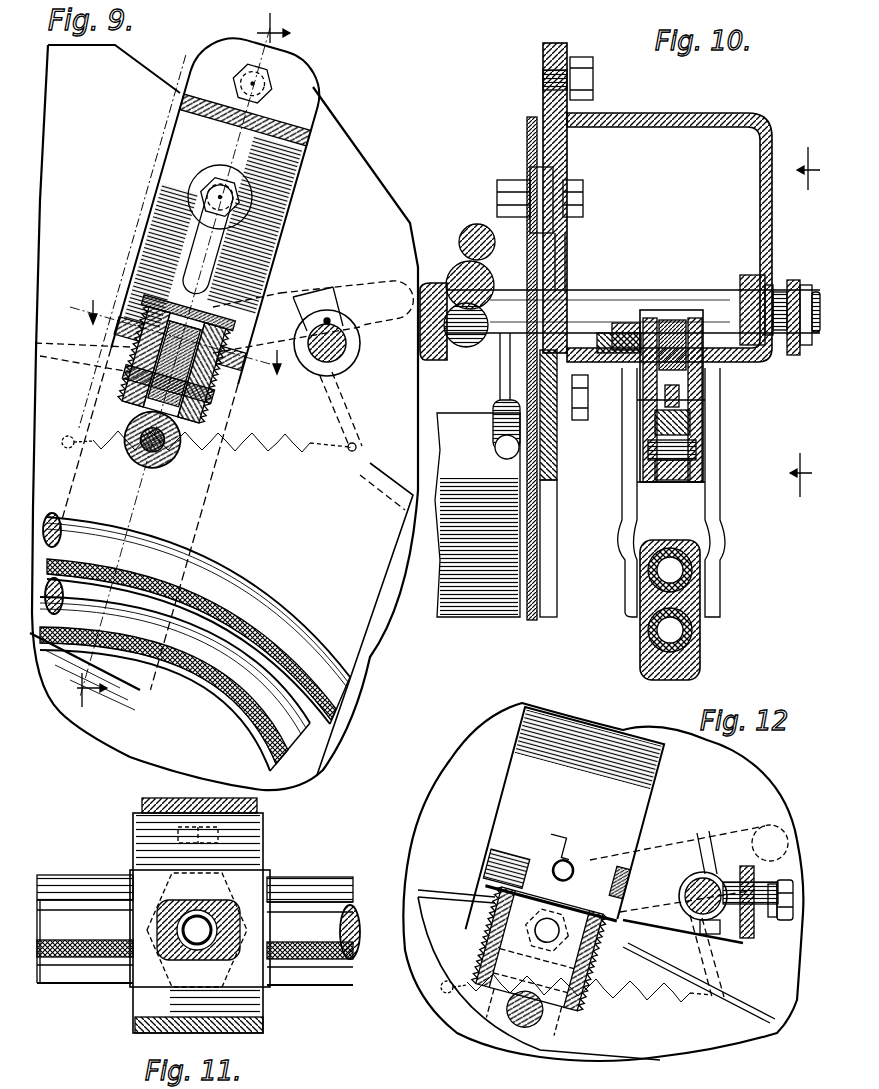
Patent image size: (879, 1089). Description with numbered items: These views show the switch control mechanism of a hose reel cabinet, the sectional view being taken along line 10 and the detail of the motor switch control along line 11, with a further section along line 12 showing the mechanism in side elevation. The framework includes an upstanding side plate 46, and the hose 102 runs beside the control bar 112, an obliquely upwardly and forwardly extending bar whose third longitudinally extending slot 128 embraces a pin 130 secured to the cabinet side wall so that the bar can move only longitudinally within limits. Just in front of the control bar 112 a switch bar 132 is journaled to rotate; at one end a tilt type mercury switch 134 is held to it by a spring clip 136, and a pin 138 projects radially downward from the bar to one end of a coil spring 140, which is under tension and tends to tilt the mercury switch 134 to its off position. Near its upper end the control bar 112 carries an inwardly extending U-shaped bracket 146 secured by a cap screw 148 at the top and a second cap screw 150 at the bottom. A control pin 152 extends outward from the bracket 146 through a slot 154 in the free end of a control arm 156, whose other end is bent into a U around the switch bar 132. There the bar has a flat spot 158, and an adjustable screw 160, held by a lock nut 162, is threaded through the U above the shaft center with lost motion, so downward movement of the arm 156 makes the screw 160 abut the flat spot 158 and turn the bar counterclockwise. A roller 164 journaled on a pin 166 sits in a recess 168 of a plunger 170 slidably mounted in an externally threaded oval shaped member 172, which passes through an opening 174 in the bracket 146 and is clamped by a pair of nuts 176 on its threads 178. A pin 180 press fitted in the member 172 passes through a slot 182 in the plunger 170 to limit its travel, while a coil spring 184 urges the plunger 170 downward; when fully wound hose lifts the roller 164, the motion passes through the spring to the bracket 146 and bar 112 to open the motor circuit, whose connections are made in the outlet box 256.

In FIG. 9, the section line 10- 10 is at (194, 363).
In FIG. 9, the section line 11- 11 is at (175, 349).
In FIG. 10, the section line 12- 12 is at (791, 322).
In FIG. 10, the side plate 46 is at (530, 622).
In FIG. 9, the conduit 102 is at (68, 436).
In FIG. 11, the conduit 102 is at (68, 985).
In FIG. 12, the conduit 102 is at (440, 1012).
In FIG. 9, the control bar 112 is at (172, 200).
In FIG. 10, the control bar 112 is at (555, 490).
In FIG. 11, the control bar 112 is at (258, 805).
In FIG. 9, the third longitudinally extending slot 128 is at (213, 257).
In FIG. 10, the third longitudinally extending slot 128 is at (565, 255).
In FIG. 9, the pin 130 is at (228, 188).
In FIG. 10, the pin 130 is at (548, 193).
In FIG. 9, the switch bar 132 is at (350, 362).
In FIG. 10, the switch bar 132 is at (583, 298).
In FIG. 12, the switch bar 132 is at (712, 874).
In FIG. 9, the tilt type mercury switch 134 is at (395, 285).
In FIG. 10, the tilt type mercury switch 134 is at (482, 224).
In FIG. 12, the tilt type mercury switch 134 is at (782, 828).
In FIG. 9, the spring clip 136 is at (318, 290).
In FIG. 10, the spring clip 136 is at (452, 262).
In FIG. 12, the spring clip 136 is at (698, 845).
In FIG. 9, the pin 138 is at (355, 410).
In FIG. 10, the pin 138 is at (503, 385).
In FIG. 12, the pin 138 is at (712, 962).
In FIG. 9, the coil spring 140 is at (270, 457).
In FIG. 10, the coil spring 140 is at (494, 425).
In FIG. 12, the coil spring 140 is at (612, 1005).
In FIG. 9, the U-shaped bracket 146 is at (312, 110).
In FIG. 10, the U-shaped bracket 146 is at (668, 113).
In FIG. 11, the U-shaped bracket 146 is at (150, 813).
In FIG. 12, the U-shaped bracket 146 is at (600, 730).
In FIG. 9, the cap screw 148 is at (238, 80).
In FIG. 10, the cap screw 148 is at (590, 75).
In FIG. 10, the second cap screw 150 is at (583, 420).
In FIG. 11, the second cap screw 150 is at (218, 835).
In FIG. 10, the control pin 152 is at (790, 355).
In FIG. 12, the control pin 152 is at (550, 868).
In FIG. 12, the slot 154 is at (560, 846).
In FIG. 12, the control arm 156 is at (640, 852).
In FIG. 12, the flat spot 158 is at (718, 935).
In FIG. 12, the adjustable screw 160 is at (760, 857).
In FIG. 12, the lock nut 162 is at (755, 930).
In FIG. 9, the roller 164 is at (128, 462).
In FIG. 10, the roller 164 is at (683, 490).
In FIG. 12, the roller 164 is at (520, 1030).
In FIG. 9, the pin 166 is at (135, 452).
In FIG. 10, the pin 166 is at (640, 480).
In FIG. 10, the recess 168 is at (703, 420).
In FIG. 9, the plunger 170 is at (120, 352).
In FIG. 10, the plunger 170 is at (725, 395).
In FIG. 11, the plunger 170 is at (175, 928).
In FIG. 12, the plunger 170 is at (538, 1030).
In FIG. 9, the externally threaded oval shaped member 172 is at (128, 368).
In FIG. 10, the externally threaded oval shaped member 172 is at (710, 330).
In FIG. 11, the externally threaded oval shaped member 172 is at (220, 890).
In FIG. 12, the externally threaded oval shaped member 172 is at (495, 950).
In FIG. 10, the opening 174 is at (625, 325).
In FIG. 9, the nuts 176 is at (118, 325).
In FIG. 10, the nuts 176 is at (615, 330).
In FIG. 11, the nuts 176 is at (120, 995).
In FIG. 12, the nuts 176 is at (490, 880).
In FIG. 9, the threads 178 is at (118, 398).
In FIG. 9, the pin 180 is at (212, 318).
In FIG. 10, the pin 180 is at (687, 330).
In FIG. 10, the slot 182 is at (700, 395).
In FIG. 11, the coil spring 184 is at (240, 915).
In FIG. 10, the outlet box 256 is at (470, 607).